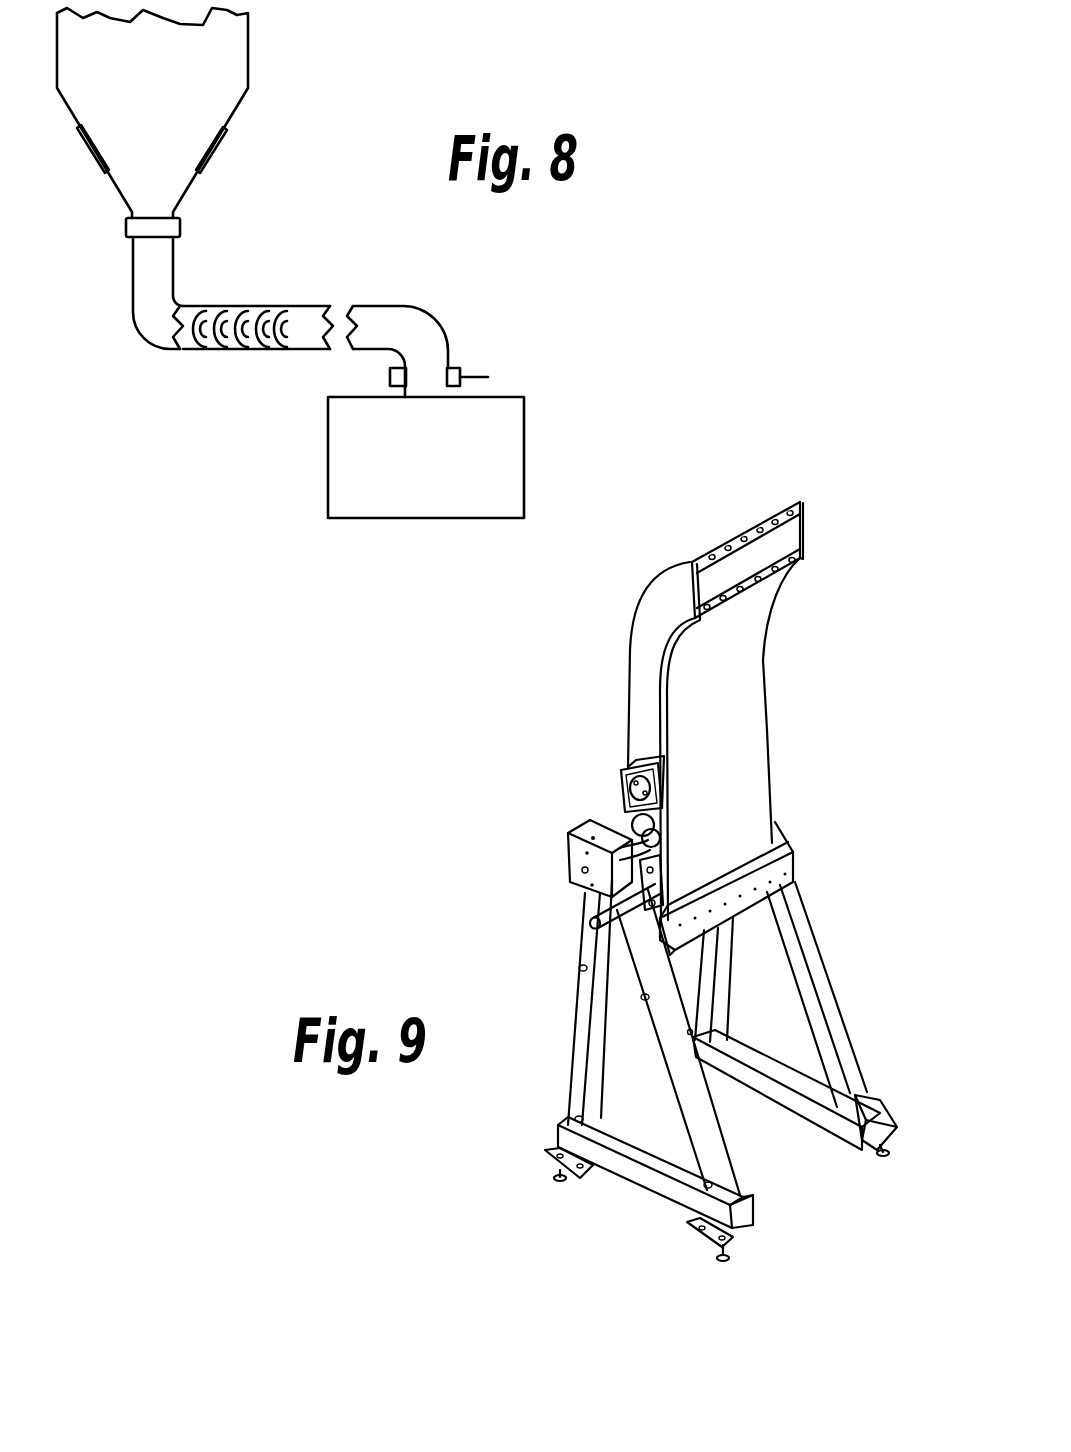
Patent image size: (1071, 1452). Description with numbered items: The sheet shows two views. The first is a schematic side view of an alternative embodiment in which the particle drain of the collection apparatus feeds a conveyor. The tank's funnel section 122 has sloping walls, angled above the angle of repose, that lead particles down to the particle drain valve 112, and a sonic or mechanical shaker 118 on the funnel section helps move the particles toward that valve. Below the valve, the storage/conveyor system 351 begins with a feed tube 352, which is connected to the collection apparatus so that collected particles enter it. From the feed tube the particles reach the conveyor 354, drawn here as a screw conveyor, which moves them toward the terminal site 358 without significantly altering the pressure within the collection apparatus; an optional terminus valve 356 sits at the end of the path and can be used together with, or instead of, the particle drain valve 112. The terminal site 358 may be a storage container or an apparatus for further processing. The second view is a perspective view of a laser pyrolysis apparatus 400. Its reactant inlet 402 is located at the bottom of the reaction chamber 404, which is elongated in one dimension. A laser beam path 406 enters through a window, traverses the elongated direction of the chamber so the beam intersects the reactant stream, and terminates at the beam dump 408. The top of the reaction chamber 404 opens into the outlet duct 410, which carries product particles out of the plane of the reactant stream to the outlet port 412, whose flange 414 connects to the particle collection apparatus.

In FIG. 8, the particle drain valve 112 is at (125, 220).
In FIG. 8, the sonic or mechanical shaker 118 is at (218, 154).
In FIG. 8, the funnel section 122 is at (243, 103).
In FIG. 8, the storage/conveyor system 351 is at (283, 309).
In FIG. 8, the feed tube 352 is at (133, 272).
In FIG. 8, the conveyor 354 is at (183, 349).
In FIG. 8, the terminus valve 356 is at (450, 368).
In FIG. 8, the terminal site 358 is at (525, 420).
In FIG. 9, the laser pyrolysis apparatus 400 is at (697, 865).
In FIG. 9, the reactant inlet 402 is at (752, 935).
In FIG. 9, the reaction chamber 404 is at (778, 758).
In FIG. 9, the laser beam path 406 is at (726, 712).
In FIG. 9, the beam dump 408 is at (583, 833).
In FIG. 9, the outlet duct 410 is at (648, 655).
In FIG. 9, the outlet port 412 is at (790, 543).
In FIG. 9, the flange 414 is at (775, 512).